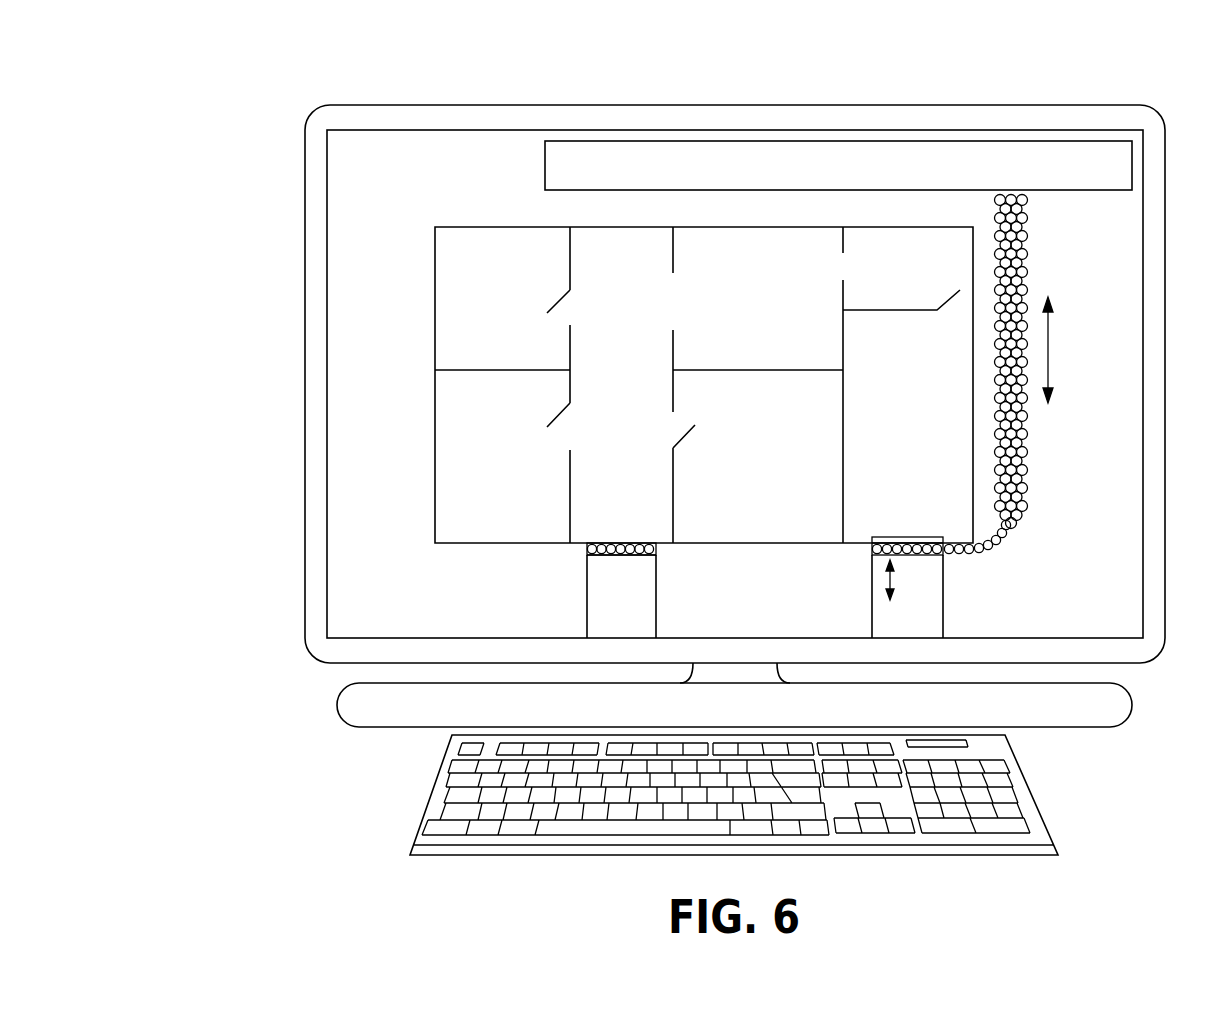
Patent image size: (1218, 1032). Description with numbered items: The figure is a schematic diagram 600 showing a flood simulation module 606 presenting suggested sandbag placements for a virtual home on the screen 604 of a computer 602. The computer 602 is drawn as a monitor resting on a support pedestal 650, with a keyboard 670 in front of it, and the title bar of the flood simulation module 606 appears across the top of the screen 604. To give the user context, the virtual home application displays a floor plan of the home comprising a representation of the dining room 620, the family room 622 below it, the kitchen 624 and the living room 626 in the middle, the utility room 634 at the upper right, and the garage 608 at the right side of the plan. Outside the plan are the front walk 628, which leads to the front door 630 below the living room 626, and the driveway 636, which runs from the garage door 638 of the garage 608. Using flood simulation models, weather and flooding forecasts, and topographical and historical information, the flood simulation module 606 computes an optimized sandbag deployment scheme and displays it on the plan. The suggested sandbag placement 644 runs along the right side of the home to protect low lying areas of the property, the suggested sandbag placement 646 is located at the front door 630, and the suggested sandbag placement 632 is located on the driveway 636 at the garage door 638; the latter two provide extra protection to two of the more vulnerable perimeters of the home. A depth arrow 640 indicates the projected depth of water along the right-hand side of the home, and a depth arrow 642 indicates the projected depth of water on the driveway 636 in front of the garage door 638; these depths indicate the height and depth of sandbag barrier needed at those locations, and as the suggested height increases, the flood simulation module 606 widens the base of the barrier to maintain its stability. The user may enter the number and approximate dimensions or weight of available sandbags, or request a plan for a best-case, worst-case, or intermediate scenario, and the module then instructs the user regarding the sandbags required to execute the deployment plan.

The schematic diagram 600 is at (248, 78).
The computer 602 is at (395, 105).
The screen 604 is at (517, 148).
The flood simulation module 606 is at (1095, 140).
The garage 608 is at (884, 433).
The dining room 620 is at (448, 245).
The family room 622 is at (448, 410).
The kitchen 624 is at (768, 237).
The living room 626 is at (762, 525).
The front walk 628 is at (598, 594).
The front door 630 is at (628, 543).
The suggested sandbag placement 632 is at (915, 553).
The utility room 634 is at (910, 237).
The driveway 636 is at (925, 622).
The garage door 638 is at (920, 537).
The depth arrow 640 is at (1048, 350).
The depth arrow 642 is at (883, 578).
The suggested sandbag placement 644 is at (1027, 262).
The suggested sandbag placement 646 is at (620, 557).
The support pedestal 650 is at (1135, 708).
The keyboard 670 is at (1035, 793).